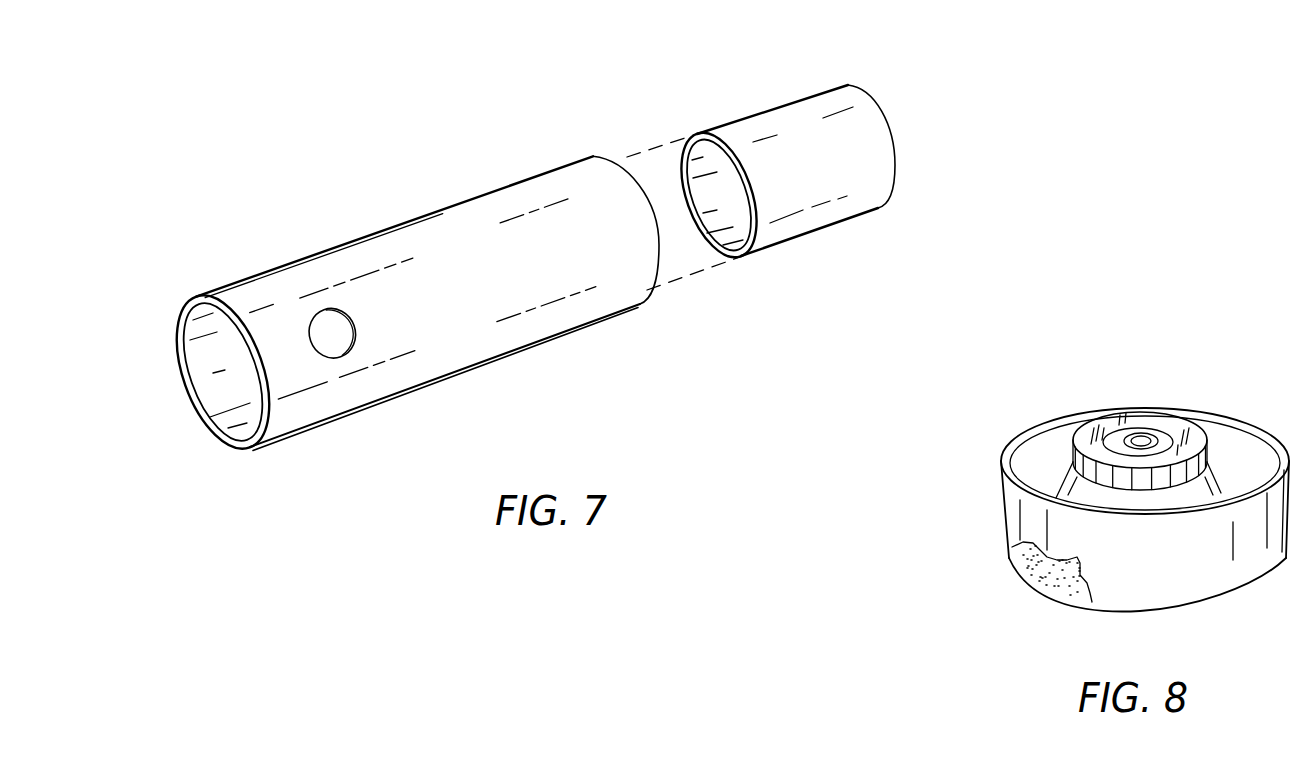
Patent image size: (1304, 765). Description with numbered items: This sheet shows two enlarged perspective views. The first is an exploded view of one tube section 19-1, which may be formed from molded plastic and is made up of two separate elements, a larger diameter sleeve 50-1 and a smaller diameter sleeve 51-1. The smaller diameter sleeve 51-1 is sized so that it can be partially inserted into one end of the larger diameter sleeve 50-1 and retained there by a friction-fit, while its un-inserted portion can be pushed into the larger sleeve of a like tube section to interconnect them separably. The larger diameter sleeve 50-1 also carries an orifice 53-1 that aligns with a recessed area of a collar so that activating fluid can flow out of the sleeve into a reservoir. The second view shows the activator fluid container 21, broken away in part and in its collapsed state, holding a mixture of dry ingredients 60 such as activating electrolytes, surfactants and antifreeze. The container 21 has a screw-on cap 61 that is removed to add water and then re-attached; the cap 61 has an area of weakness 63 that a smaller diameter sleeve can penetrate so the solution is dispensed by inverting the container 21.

In FIG. 7, the tube section 19-1 is at (411, 168).
In FIG. 7, the larger diameter sleeve 50-1 is at (522, 327).
In FIG. 7, the smaller diameter sleeve 51-1 is at (805, 218).
In FIG. 7, the orifice 53-1 is at (341, 338).
In FIG. 8, the activator fluid container 21 is at (1062, 388).
In FIG. 8, the mixture of dry ingredients 60 is at (1047, 578).
In FIG. 8, the screw-on cap 61 is at (1190, 438).
In FIG. 8, the area of weakness 63 is at (1136, 438).